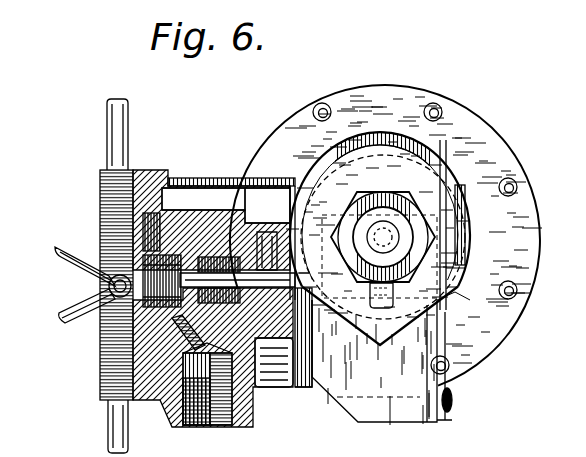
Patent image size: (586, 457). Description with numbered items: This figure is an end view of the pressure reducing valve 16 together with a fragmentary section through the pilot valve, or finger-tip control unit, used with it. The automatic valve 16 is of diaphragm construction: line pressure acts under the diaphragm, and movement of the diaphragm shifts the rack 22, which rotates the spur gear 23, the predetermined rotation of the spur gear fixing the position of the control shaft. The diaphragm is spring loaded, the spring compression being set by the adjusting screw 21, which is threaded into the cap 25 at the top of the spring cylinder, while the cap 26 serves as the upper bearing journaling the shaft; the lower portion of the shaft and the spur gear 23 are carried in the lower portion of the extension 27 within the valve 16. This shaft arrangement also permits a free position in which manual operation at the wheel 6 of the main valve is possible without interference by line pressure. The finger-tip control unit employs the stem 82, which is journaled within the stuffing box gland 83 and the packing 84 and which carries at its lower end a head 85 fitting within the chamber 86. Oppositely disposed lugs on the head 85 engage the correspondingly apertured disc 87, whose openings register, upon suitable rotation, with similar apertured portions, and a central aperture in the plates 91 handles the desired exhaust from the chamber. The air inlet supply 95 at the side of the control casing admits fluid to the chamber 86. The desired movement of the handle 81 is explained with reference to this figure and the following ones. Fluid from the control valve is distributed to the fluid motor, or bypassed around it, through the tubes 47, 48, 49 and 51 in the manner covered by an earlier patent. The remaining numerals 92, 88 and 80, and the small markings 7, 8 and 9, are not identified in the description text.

The tube 48 is at (107, 129).
The tube 49 is at (112, 423).
The tube 47 is at (72, 243).
The tube 51 is at (82, 319).
The plates 91 is at (133, 253).
The apertured disc 87 is at (112, 326).
The boss 92 is at (103, 357).
The packing 84 is at (217, 263).
The head 85 is at (198, 240).
The extension 27 is at (257, 210).
The chamber 88 is at (168, 230).
The stuffing box gland 83 is at (262, 237).
The rack 22 is at (342, 163).
The cap 26 is at (432, 135).
The adjusting screw 21 is at (457, 227).
The cap 25 is at (465, 240).
The chamber 86 is at (327, 312).
The stem 82 is at (368, 328).
The spur gear 23 is at (381, 345).
The handle 81 is at (458, 303).
The lug 80 is at (440, 330).
The pressure reducing valve 16 is at (455, 362).
The air inlet supply 95 is at (227, 425).
The section line 7 is at (134, 378).
The wheel 6 is at (143, 218).
The section line 9 is at (160, 350).
The section line 8 is at (143, 362).